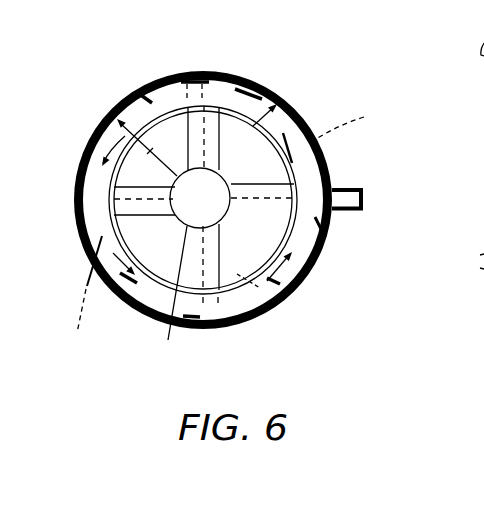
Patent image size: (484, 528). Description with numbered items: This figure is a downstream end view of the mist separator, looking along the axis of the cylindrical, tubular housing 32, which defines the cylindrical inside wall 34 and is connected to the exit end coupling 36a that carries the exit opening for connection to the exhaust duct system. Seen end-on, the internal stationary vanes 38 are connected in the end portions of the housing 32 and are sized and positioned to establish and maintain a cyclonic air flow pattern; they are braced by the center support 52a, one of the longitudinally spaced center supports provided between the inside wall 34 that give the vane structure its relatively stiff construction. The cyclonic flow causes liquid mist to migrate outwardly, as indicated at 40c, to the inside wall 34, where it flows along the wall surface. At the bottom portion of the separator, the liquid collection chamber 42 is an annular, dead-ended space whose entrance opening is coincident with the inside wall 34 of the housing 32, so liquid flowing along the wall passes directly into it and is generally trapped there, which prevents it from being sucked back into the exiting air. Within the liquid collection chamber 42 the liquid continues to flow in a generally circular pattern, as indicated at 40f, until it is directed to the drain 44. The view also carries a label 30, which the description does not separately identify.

The rotor assembly 30 is at (337, 104).
The housing 32 is at (301, 112).
The inside wall 34 is at (349, 116).
The exit end coupling 36a is at (253, 289).
The vanes 38 is at (80, 175).
The outward liquid migration 40c is at (168, 166).
The circular liquid flow pattern 40f is at (97, 125).
The liquid collection chamber 42 is at (73, 328).
The drain 44 is at (347, 212).
The center support 52a is at (189, 271).